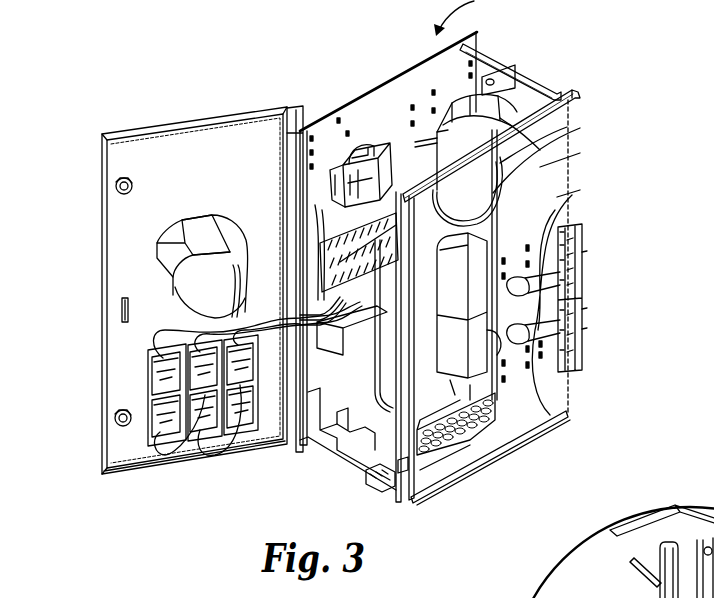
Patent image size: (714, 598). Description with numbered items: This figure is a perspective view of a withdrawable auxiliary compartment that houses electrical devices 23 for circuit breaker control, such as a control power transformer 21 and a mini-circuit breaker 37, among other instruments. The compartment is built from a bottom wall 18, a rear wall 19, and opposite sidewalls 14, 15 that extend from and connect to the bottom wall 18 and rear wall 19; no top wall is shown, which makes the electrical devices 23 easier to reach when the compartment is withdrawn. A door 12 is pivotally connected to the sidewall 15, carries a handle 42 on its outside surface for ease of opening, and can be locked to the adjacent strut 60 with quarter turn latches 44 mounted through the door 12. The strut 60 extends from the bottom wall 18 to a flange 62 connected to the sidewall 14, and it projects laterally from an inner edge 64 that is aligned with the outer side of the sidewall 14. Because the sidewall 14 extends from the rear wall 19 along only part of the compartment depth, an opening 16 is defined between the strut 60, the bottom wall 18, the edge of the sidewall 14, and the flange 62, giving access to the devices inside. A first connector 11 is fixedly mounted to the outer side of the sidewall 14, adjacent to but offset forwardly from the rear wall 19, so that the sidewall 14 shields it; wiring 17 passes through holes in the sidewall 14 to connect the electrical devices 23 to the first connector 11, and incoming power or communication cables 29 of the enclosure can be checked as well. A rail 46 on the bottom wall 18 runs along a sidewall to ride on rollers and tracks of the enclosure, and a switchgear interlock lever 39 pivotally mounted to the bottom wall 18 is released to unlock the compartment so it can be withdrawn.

The first connector 11 is at (586, 268).
The door 12 is at (128, 237).
The sidewall 14 is at (566, 163).
The sidewall 15 is at (408, 75).
The opening 16 is at (560, 134).
The wiring 17 is at (572, 198).
The bottom wall 18 is at (430, 455).
The rear wall 19 is at (540, 64).
The control power transformer 21 is at (470, 425).
The electrical device 23 is at (186, 178).
The incoming power/communication cables 29 is at (632, 562).
The mini-circuit breaker 37 is at (355, 165).
The switchgear interlock lever 39 is at (343, 460).
The handle 42 is at (120, 321).
The quarter turn latch 44 is at (131, 178).
The rail 46 is at (522, 462).
The strut 60 is at (393, 475).
The flange 62 is at (462, 157).
The inner edge 64 is at (400, 470).